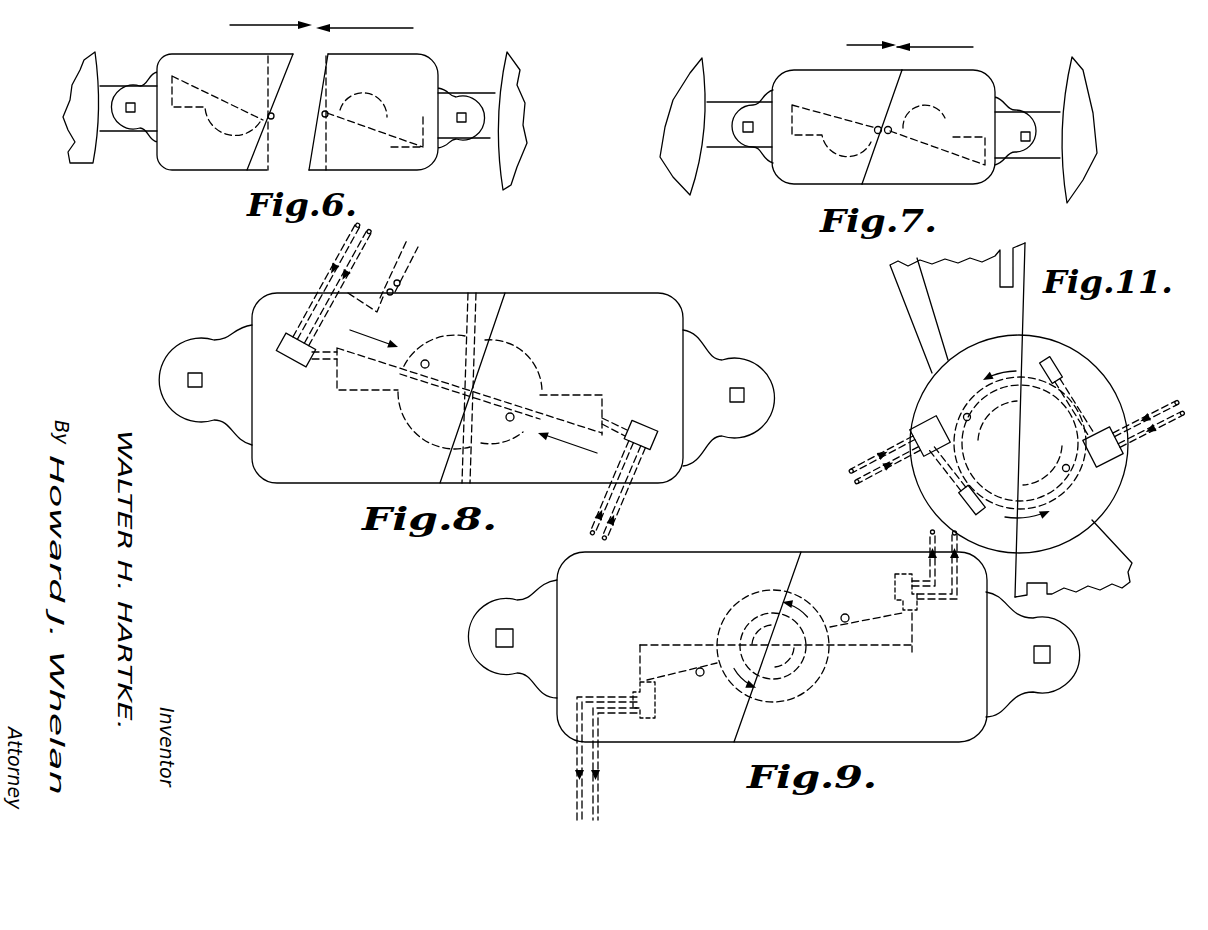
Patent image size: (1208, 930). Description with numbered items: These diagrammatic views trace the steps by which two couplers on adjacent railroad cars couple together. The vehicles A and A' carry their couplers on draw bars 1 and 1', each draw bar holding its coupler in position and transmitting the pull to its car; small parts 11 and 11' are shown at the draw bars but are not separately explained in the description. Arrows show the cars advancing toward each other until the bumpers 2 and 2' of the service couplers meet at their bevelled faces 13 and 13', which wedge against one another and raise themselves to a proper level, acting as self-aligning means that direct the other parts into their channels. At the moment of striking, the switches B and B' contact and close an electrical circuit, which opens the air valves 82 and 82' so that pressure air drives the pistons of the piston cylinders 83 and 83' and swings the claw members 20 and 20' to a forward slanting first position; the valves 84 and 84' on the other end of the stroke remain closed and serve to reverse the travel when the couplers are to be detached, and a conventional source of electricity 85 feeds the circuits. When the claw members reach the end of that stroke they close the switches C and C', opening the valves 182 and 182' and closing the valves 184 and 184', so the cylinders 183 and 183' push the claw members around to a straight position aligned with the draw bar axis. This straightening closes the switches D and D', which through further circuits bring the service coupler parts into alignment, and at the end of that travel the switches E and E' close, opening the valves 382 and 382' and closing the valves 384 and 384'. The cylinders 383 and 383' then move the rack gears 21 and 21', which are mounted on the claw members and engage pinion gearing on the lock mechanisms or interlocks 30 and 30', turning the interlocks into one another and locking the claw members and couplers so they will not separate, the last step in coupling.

In FIG. 6, the draw bar 1 is at (128, 95).
In FIG. 7, the draw bar 1 is at (739, 110).
In FIG. 6, the draw bar 1' is at (466, 97).
In FIG. 7, the draw bar 1' is at (1027, 116).
In FIG. 6, the key 11 is at (124, 138).
In FIG. 7, the key 11 is at (741, 157).
In FIG. 6, the key 11' is at (471, 147).
In FIG. 7, the key 11' is at (1033, 161).
In FIG. 6, the vehicle A is at (81, 107).
In FIG. 7, the vehicle A is at (682, 126).
In FIG. 6, the vehicle A' is at (512, 121).
In FIG. 7, the vehicle A' is at (1079, 130).
In FIG. 6, the bumper face 13 is at (280, 112).
In FIG. 6, the bumper face 13' is at (305, 112).
In FIG. 6, the bumper 2 is at (217, 105).
In FIG. 7, the bumper 2 is at (834, 131).
In FIG. 6, the bumper 2' is at (375, 120).
In FIG. 7, the bumper 2' is at (937, 135).
In FIG. 6, the claw member 20 is at (202, 112).
In FIG. 7, the claw member 20 is at (817, 127).
In FIG. 8, the claw member 20 is at (469, 392).
In FIG. 9, the claw member 20 is at (655, 662).
In FIG. 11, the claw member 20 is at (957, 308).
In FIG. 6, the claw member 20' is at (397, 112).
In FIG. 7, the claw member 20' is at (949, 127).
In FIG. 8, the claw member 20' is at (541, 391).
In FIG. 9, the claw member 20' is at (896, 638).
In FIG. 11, the claw member 20' is at (1073, 558).
In FIG. 6, the switch B is at (281, 126).
In FIG. 7, the switch B is at (866, 126).
In FIG. 8, the switch B is at (413, 272).
In FIG. 6, the switch B' is at (339, 126).
In FIG. 7, the switch B' is at (899, 143).
In FIG. 8, the switch B' is at (410, 290).
In FIG. 8, the air valve 82 is at (327, 287).
In FIG. 8, the air valve 82' is at (591, 488).
In FIG. 8, the piston cylinder 83 is at (306, 361).
In FIG. 8, the piston cylinder 83' is at (636, 428).
In FIG. 8, the valve 84 is at (327, 281).
In FIG. 8, the valve 84' is at (638, 493).
In FIG. 8, the source of electricity 85 is at (416, 240).
In FIG. 8, the switch C is at (411, 361).
In FIG. 8, the switch C' is at (519, 436).
In FIG. 9, the valve 182 is at (582, 758).
In FIG. 9, the valve 182' is at (965, 565).
In FIG. 9, the cylinder 183 is at (673, 704).
In FIG. 9, the cylinder 183' is at (881, 592).
In FIG. 9, the valve 184 is at (620, 764).
In FIG. 9, the valve 184' is at (909, 558).
In FIG. 9, the switch D is at (694, 685).
In FIG. 9, the switch D' is at (855, 611).
In FIG. 11, the rack gear 21 is at (942, 485).
In FIG. 11, the rack gear 21' is at (1084, 390).
In FIG. 9, the lock mechanism 30 is at (773, 646).
In FIG. 11, the lock mechanism 30 is at (1020, 445).
In FIG. 11, the interlock 30' is at (1044, 424).
In FIG. 11, the valve 382 is at (882, 474).
In FIG. 11, the valve 382' is at (1146, 400).
In FIG. 11, the cylinder 383 is at (905, 436).
In FIG. 11, the cylinder 383' is at (1127, 462).
In FIG. 11, the valve 384 is at (871, 464).
In FIG. 11, the valve 384' is at (1151, 435).
In FIG. 11, the switch E is at (1055, 459).
In FIG. 11, the switch E' is at (982, 427).